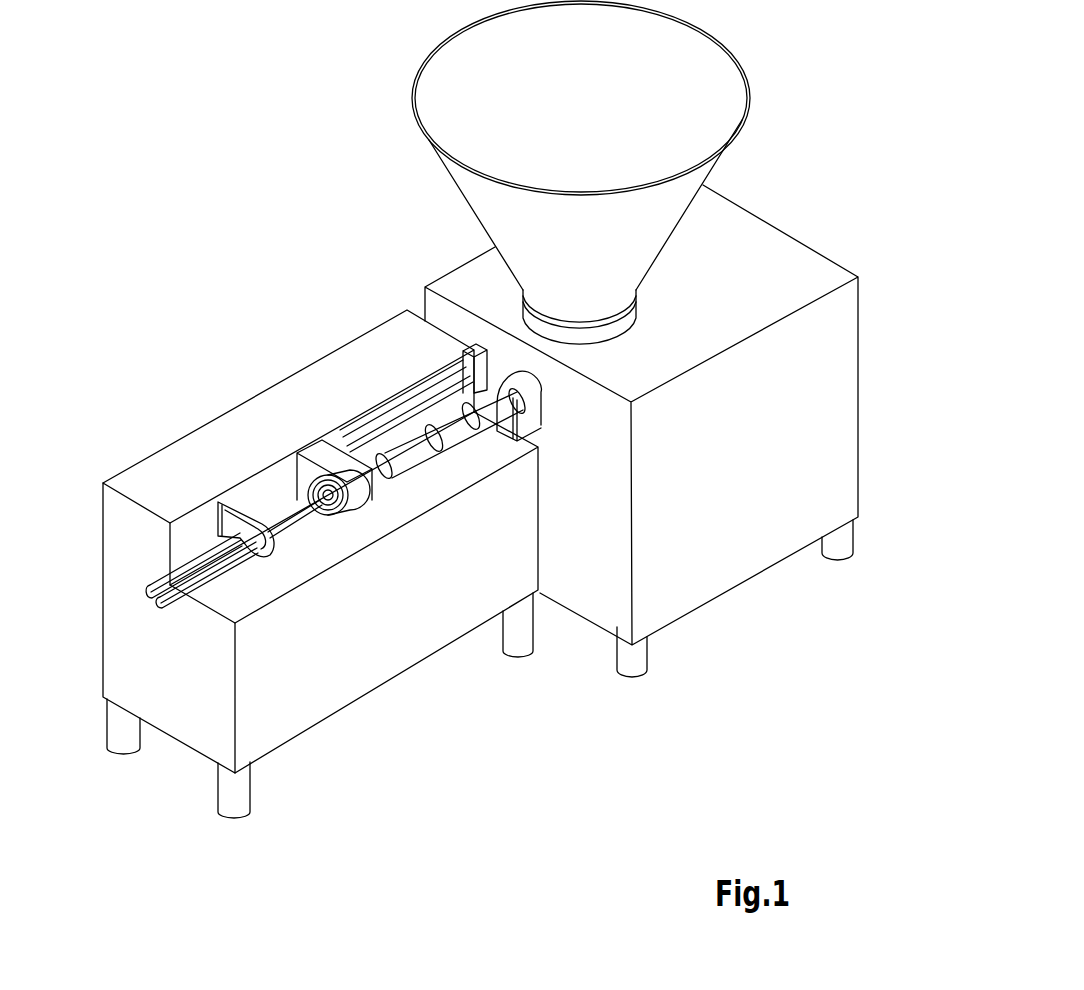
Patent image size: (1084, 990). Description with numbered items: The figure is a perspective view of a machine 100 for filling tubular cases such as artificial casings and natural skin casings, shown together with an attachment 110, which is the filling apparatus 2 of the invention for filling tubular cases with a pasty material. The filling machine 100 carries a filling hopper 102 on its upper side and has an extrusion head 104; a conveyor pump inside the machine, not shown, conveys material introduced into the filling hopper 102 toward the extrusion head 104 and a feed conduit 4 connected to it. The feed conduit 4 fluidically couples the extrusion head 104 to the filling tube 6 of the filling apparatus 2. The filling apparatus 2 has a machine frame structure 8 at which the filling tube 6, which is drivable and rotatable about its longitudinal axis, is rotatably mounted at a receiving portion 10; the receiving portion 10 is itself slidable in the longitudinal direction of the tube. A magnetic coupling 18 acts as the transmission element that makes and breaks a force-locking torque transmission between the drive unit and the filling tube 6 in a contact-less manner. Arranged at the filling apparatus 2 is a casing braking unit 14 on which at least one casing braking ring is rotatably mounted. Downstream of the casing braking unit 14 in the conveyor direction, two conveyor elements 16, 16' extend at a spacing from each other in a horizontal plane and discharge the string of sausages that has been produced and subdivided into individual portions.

The filling apparatus 2 is at (281, 784).
The feed conduit 4 is at (458, 425).
The filling tube 6 is at (287, 513).
The machine frame structure 8 is at (383, 660).
The receiving portion 10 is at (373, 465).
The casing braking unit 14 is at (230, 522).
The conveyor element 16 is at (142, 548).
The conveyor element 16' is at (150, 606).
The magnetic coupling 18 is at (333, 526).
The filling machine 100 is at (830, 196).
The filling hopper 102 is at (718, 85).
The extrusion head 104 is at (525, 378).
The attachment 110 is at (346, 305).